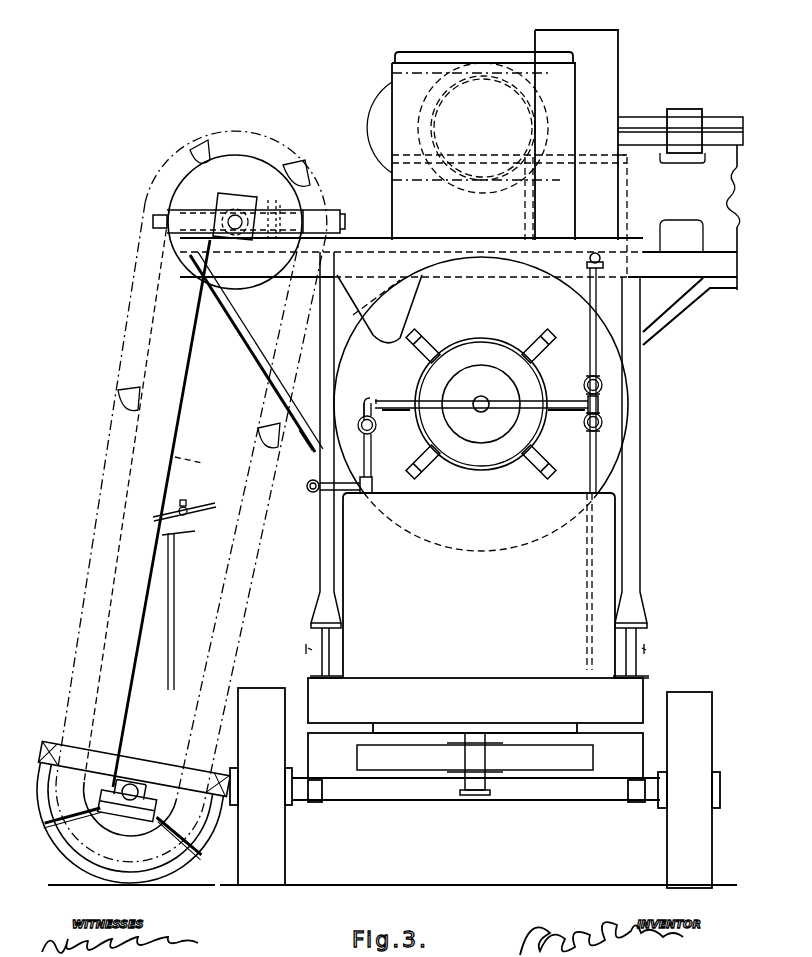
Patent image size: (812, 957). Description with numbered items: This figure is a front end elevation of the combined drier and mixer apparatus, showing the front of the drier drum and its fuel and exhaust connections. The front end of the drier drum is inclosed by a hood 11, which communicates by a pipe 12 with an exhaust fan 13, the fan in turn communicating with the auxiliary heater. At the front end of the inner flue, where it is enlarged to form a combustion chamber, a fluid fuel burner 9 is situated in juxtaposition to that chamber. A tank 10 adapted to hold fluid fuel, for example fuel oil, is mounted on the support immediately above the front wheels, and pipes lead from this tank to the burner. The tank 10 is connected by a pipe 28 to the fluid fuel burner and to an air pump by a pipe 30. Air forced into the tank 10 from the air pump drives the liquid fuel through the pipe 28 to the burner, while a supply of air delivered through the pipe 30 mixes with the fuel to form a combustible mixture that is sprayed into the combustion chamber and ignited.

The fluid fuel burner 9 is at (481, 396).
The tank 10 is at (479, 585).
The hood 11 is at (481, 404).
The pipe 12 is at (492, 180).
The exhaust fan 13 is at (576, 153).
The pipe 28 is at (602, 373).
The pipe 30 is at (307, 486).